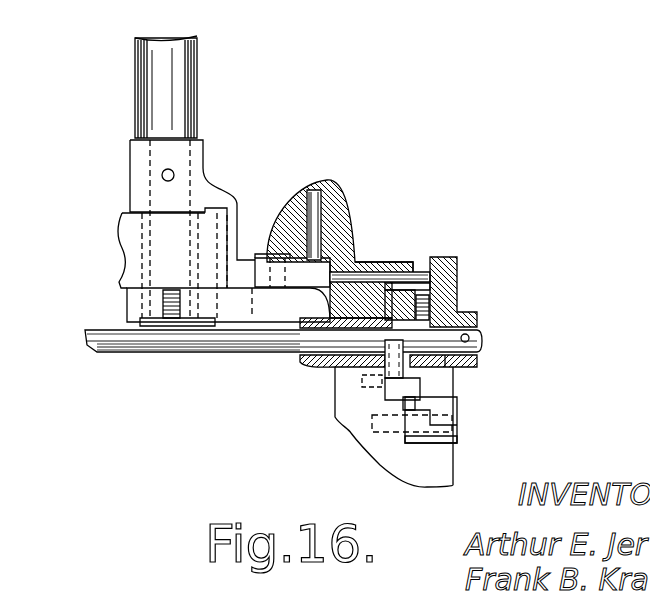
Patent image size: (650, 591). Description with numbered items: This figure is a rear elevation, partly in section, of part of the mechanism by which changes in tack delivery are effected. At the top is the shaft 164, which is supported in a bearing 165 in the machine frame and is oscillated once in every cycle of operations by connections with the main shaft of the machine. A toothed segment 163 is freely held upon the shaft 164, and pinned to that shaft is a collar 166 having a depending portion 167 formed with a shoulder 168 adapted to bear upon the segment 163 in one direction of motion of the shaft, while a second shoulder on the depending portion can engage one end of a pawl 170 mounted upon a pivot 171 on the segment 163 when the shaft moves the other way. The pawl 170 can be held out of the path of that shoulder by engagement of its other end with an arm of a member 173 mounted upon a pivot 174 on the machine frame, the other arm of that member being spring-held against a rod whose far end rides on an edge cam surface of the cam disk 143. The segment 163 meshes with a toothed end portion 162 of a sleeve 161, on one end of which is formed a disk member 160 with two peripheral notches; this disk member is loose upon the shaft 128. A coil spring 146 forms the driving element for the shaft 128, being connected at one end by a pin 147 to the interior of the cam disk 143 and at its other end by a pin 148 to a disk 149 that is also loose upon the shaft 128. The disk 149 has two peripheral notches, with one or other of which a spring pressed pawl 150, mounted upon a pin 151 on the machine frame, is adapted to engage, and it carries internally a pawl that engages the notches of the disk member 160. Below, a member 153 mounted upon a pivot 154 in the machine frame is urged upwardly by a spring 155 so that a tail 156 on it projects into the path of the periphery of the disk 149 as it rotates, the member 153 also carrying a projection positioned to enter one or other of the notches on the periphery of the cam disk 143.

The shaft 164 is at (175, 88).
The collar 166 is at (143, 157).
The depending portion 167 is at (228, 208).
The bearing 165 is at (127, 243).
The toothed segment 163 is at (275, 308).
The pivot 171 is at (232, 308).
The member 173 is at (300, 270).
The pawl 170 is at (288, 242).
The pivot 174 is at (322, 207).
The disk member 160 is at (428, 268).
The pin 147 is at (460, 262).
The cam disk 143 is at (455, 280).
The coil spring 146 is at (455, 296).
The disk 149 is at (455, 307).
The pin 148 is at (480, 320).
The shaft 128 is at (118, 356).
The shoulder 168 is at (175, 358).
The toothed end portion 162 is at (320, 325).
The sleeve 161 is at (335, 372).
The spring pressed pawl 150 is at (393, 366).
The pin 151 is at (370, 385).
The pivot 154 is at (392, 422).
The tail 156 is at (418, 398).
The member 153 is at (458, 425).
The spring 155 is at (460, 440).